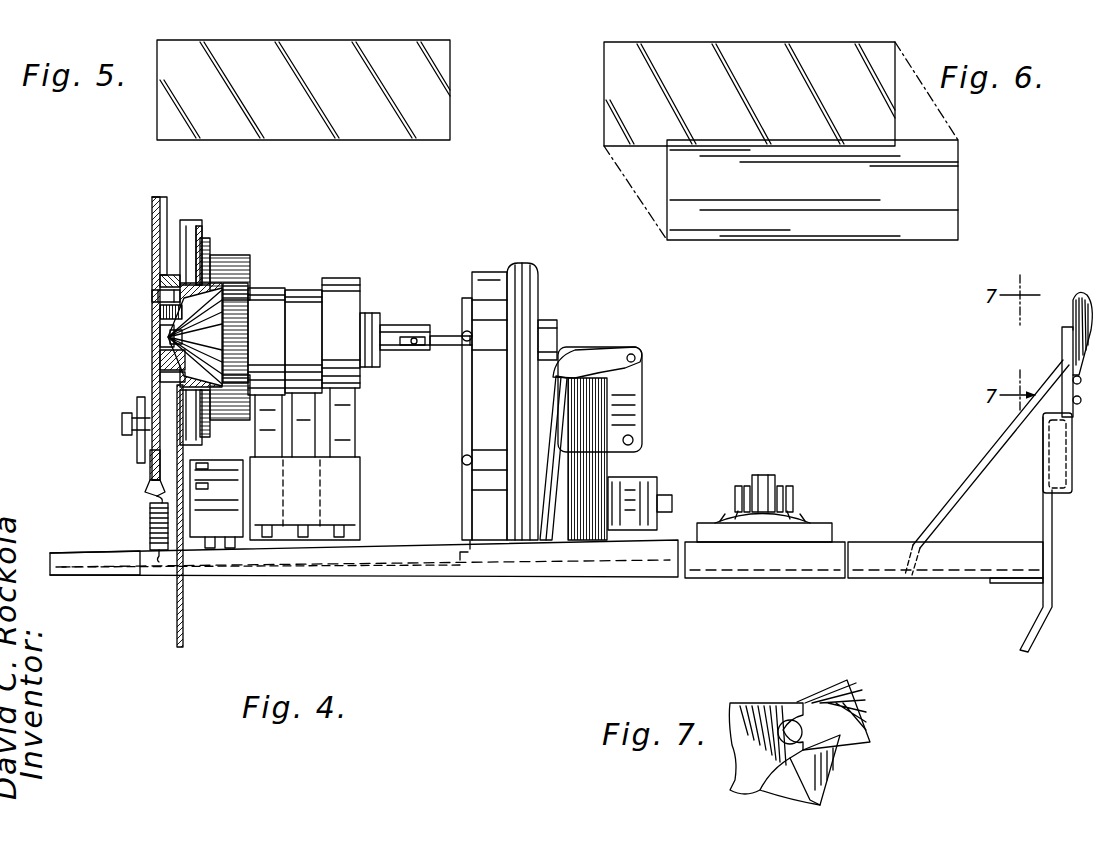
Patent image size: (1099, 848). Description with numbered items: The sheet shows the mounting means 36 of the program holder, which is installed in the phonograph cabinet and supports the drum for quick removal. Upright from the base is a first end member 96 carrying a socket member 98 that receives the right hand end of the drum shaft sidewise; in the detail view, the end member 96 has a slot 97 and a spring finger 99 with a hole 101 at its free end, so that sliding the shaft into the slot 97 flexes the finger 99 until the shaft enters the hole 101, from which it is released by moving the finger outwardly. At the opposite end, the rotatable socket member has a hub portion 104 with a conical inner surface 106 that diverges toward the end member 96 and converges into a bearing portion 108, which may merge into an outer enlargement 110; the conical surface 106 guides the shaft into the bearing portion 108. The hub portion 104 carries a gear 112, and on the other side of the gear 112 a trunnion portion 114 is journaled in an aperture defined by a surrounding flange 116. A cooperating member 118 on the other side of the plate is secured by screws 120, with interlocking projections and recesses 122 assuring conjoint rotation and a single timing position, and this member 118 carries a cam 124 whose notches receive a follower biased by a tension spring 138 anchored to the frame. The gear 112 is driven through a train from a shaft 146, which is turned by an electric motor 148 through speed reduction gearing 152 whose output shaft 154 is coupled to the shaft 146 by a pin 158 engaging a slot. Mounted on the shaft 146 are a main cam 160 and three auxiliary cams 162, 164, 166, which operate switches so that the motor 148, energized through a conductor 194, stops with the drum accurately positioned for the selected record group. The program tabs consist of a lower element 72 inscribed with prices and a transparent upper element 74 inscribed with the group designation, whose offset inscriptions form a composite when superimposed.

In FIG. 5, the upper element 74 is at (411, 50).
In FIG. 6, the upper element 74 is at (868, 52).
In FIG. 6, the lower element 72 is at (958, 167).
In FIG. 4, the mounting means 36 is at (137, 232).
In FIG. 4, the gear 112 is at (205, 236).
In FIG. 4, the main cam 160 is at (236, 262).
In FIG. 4, the hub portion 104 is at (216, 288).
In FIG. 4, the conical inner surface 106 is at (218, 337).
In FIG. 4, the surrounding flange 116 is at (172, 284).
In FIG. 4, the trunnion portion 114 is at (152, 297).
In FIG. 4, the screws 120 is at (158, 311).
In FIG. 4, the outer enlargement 110 is at (162, 336).
In FIG. 4, the bearing portion 108 is at (170, 344).
In FIG. 4, the cooperating member 118 is at (162, 362).
In FIG. 4, the projections and recesses 122 is at (162, 378).
In FIG. 4, the cam 124 is at (150, 478).
In FIG. 4, the tension spring 138 is at (148, 527).
In FIG. 4, the conductor 194 is at (135, 576).
In FIG. 4, the auxiliary cam 162 is at (267, 341).
In FIG. 4, the auxiliary cam 164 is at (304, 341).
In FIG. 4, the auxiliary cam 166 is at (342, 333).
In FIG. 4, the shaft 146 is at (400, 330).
In FIG. 4, the pin 158 is at (413, 339).
In FIG. 4, the output shaft 154 is at (452, 348).
In FIG. 4, the speed reduction gearing 152 is at (544, 297).
In FIG. 4, the electric motor 148 is at (648, 410).
In FIG. 4, the first end member 96 is at (1043, 500).
In FIG. 7, the first end member 96 is at (825, 786).
In FIG. 4, the socket member 98 is at (1040, 363).
In FIG. 7, the socket member 98 is at (732, 758).
In FIG. 7, the spring finger 99 is at (868, 741).
In FIG. 7, the slot 97 is at (775, 780).
In FIG. 7, the hole 101 is at (802, 728).